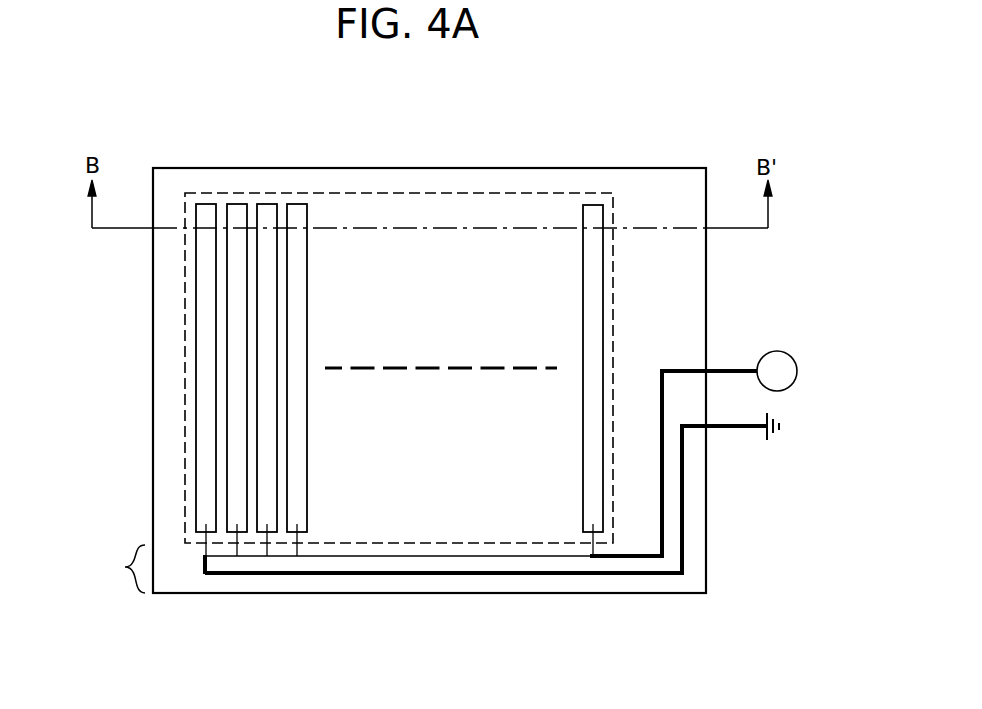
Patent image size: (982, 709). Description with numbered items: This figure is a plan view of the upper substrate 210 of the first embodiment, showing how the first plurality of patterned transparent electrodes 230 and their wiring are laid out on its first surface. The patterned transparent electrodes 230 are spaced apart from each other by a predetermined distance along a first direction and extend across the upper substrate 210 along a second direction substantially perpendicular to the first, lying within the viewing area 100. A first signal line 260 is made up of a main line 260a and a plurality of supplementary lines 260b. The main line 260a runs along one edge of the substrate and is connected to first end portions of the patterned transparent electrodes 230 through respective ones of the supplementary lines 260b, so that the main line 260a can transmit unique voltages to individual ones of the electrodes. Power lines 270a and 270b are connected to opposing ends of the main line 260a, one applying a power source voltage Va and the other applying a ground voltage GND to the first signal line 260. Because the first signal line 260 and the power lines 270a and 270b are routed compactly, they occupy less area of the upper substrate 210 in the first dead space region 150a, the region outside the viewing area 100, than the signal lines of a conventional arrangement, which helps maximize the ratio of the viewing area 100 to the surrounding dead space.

The viewing area 100 is at (461, 193).
The first plurality of patterned transparent electrodes 230 is at (593, 210).
The upper substrate 210 is at (694, 267).
The power line 270a is at (733, 371).
The power line 270b is at (733, 427).
The supplementary lines 260b is at (196, 537).
The first dead space region 150a is at (103, 569).
The first signal line 260 is at (218, 560).
The main line 260a is at (463, 557).